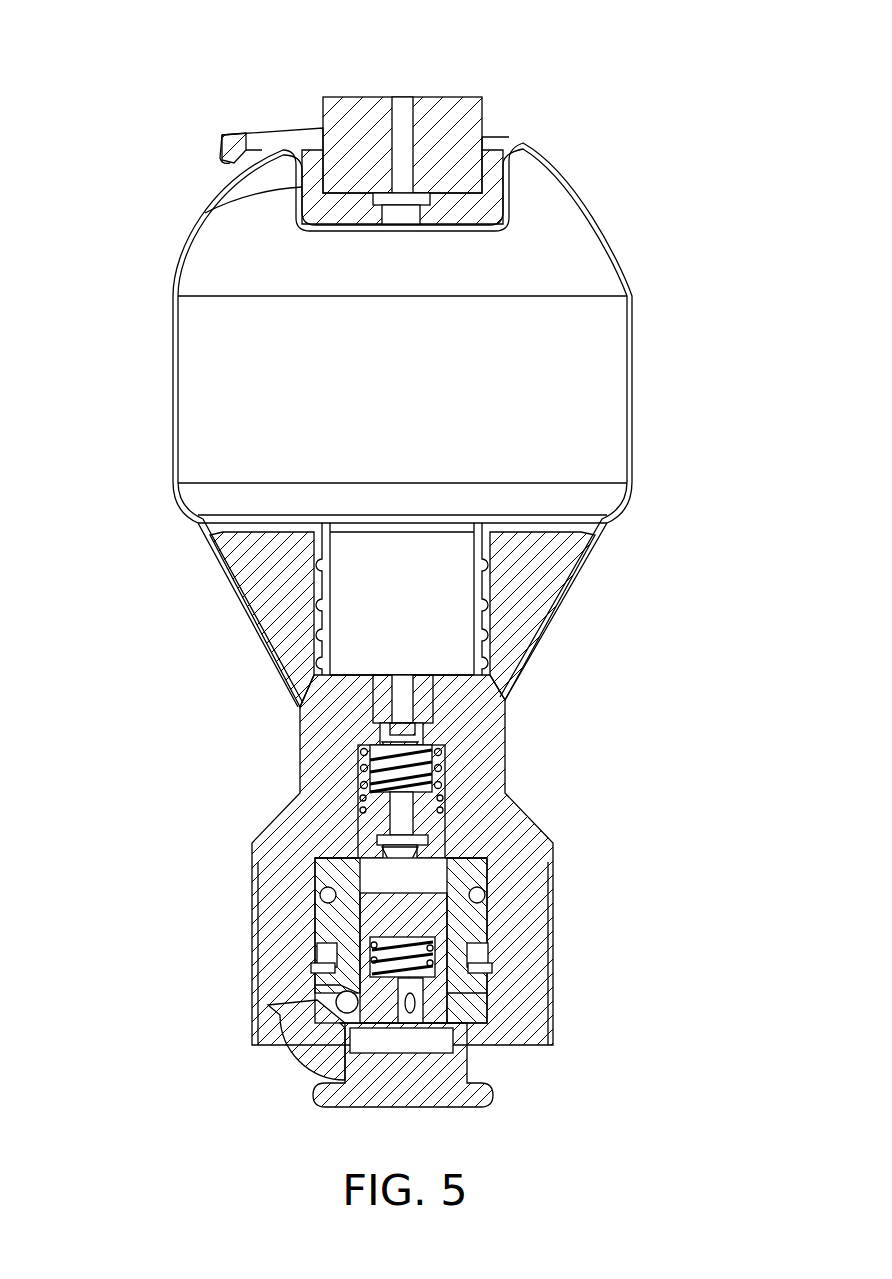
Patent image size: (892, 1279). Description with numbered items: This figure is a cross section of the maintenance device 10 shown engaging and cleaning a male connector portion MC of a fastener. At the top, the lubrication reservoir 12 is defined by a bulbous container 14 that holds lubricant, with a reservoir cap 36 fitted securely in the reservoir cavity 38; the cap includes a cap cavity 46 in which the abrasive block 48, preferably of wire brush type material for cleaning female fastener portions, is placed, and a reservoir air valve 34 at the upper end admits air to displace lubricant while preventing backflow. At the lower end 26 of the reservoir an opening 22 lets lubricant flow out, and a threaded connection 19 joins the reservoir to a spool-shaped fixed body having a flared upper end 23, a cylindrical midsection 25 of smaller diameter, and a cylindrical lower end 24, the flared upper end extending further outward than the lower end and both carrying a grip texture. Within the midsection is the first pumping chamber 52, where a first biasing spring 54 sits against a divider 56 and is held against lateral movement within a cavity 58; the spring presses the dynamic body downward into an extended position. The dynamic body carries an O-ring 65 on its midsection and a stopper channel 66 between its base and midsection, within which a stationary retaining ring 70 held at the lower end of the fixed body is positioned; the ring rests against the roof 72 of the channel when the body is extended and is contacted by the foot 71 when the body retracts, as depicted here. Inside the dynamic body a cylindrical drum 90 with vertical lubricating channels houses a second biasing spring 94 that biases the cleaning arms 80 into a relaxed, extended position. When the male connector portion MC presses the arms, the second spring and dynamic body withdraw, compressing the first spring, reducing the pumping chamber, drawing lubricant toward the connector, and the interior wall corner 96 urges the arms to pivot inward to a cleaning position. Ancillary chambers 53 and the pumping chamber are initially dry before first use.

The maintenance device 10 is at (585, 118).
The lubrication reservoir 12 is at (165, 385).
The bulbous bottle or container 14 is at (187, 470).
The threaded connection 19 is at (320, 607).
The opening 22 is at (468, 715).
The flared upper end 23 is at (218, 548).
The cylindrical lower end 24 is at (252, 848).
The cylindrical midsection 25 is at (300, 745).
The lower end of lubrication reservoir 26 is at (470, 668).
The reservoir air valve 34 is at (373, 215).
The reservoir cap 36 is at (283, 130).
The reservoir cavity 38 is at (215, 207).
The cap cavity 46 is at (500, 140).
The abrasive block 48 is at (333, 97).
The first pumping chamber 52 is at (448, 760).
The ancillary chambers 53 is at (313, 967).
The first biasing spring 54 is at (365, 775).
The divider 56 is at (352, 706).
The cavity 58 is at (372, 752).
The O-ring 65 is at (320, 893).
The stopper channel 66 is at (320, 953).
The retaining ring 70 is at (318, 988).
The foot of stopper channel 71 is at (487, 992).
The roof of stopper channel 72 is at (490, 908).
The cleaning arm 80 is at (285, 1050).
The cylindrical drum 90 is at (480, 853).
The second biasing spring 94 is at (462, 1020).
The interior wall corner 96 is at (325, 1005).
The male connector portion MC is at (333, 1110).